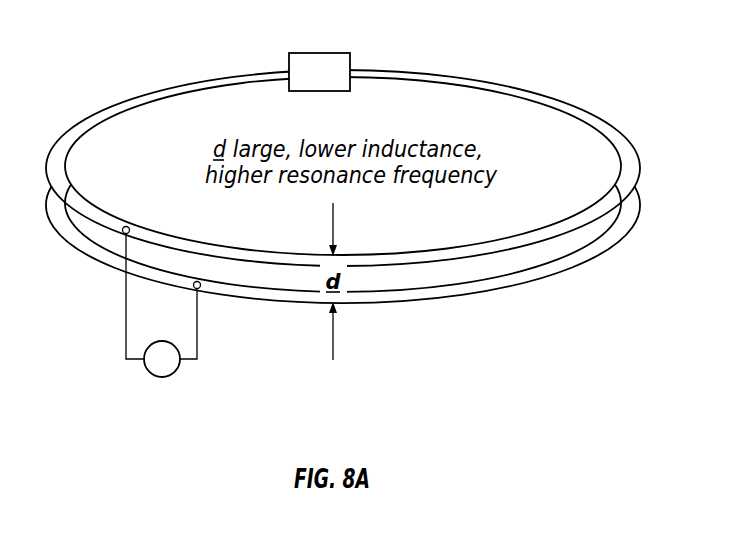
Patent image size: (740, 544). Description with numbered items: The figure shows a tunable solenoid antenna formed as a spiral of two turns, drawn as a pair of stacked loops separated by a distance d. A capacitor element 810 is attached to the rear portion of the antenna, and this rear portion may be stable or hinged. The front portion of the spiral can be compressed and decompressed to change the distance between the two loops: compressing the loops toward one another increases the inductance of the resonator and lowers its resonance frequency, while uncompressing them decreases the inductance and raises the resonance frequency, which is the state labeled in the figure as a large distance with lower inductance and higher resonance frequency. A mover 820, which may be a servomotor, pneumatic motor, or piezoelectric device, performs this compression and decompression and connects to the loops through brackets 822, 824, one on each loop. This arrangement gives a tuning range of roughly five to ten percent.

The capacitor element 810 is at (342, 53).
The mover 820 is at (163, 377).
The bracket 822 is at (126, 226).
The bracket 824 is at (197, 281).